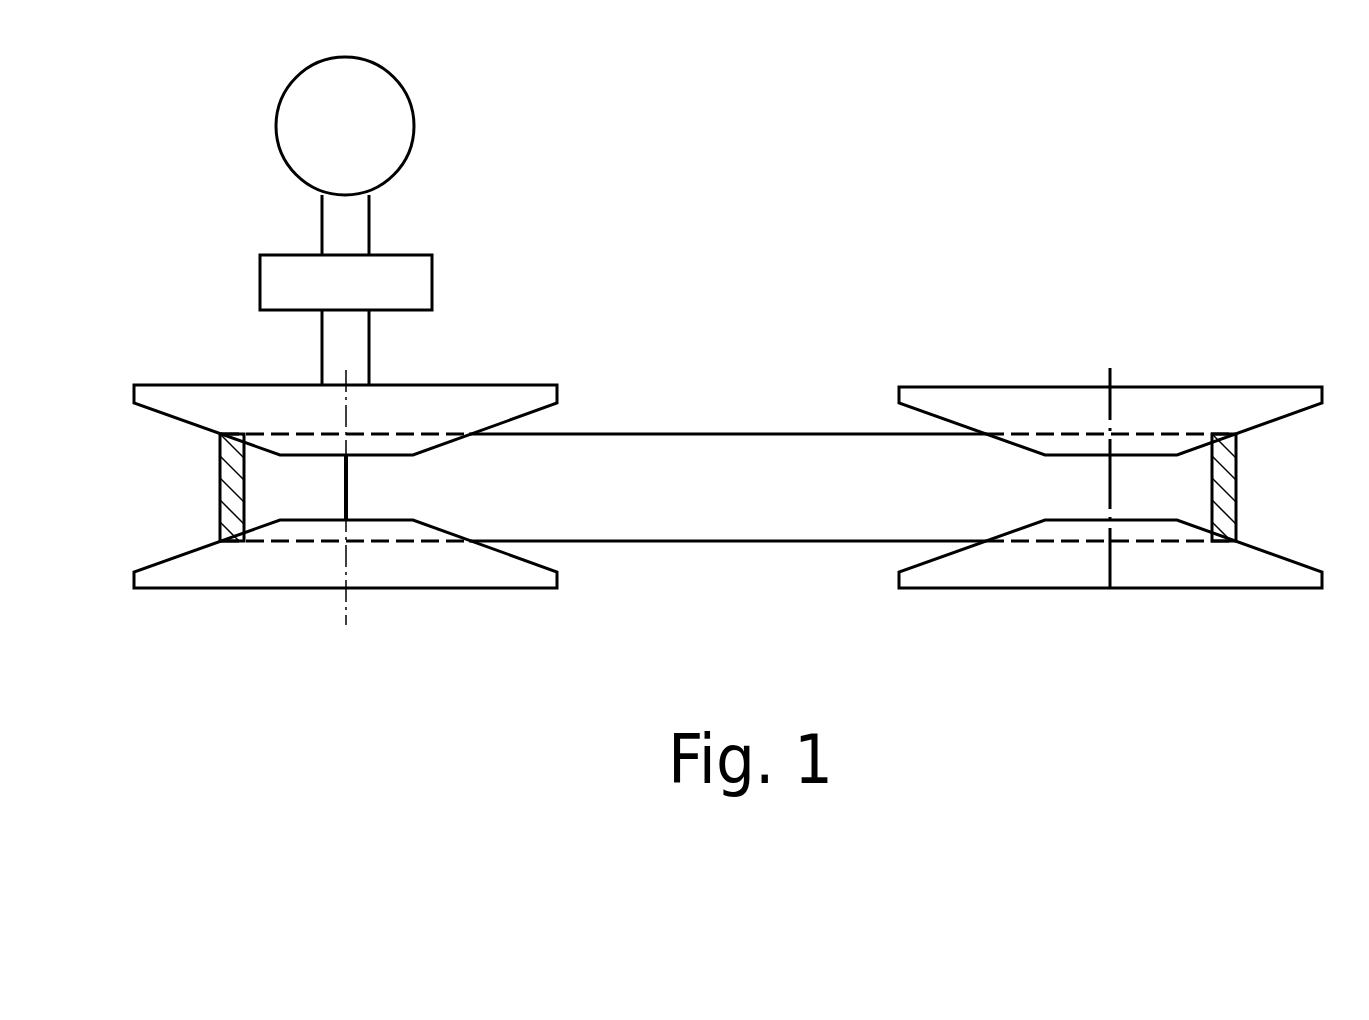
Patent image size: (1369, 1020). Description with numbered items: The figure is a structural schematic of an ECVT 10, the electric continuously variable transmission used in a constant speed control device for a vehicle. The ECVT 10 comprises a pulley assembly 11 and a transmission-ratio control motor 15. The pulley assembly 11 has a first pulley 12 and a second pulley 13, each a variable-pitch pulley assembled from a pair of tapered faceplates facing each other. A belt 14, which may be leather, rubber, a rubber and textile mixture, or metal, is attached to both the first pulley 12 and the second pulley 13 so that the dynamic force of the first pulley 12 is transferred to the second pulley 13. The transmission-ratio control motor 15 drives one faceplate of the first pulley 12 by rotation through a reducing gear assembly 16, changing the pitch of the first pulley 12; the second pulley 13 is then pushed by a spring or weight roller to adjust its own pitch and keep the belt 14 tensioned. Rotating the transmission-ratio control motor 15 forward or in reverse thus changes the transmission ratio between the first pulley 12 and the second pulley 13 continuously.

The ECVT 10 is at (1010, 154).
The pulley assembly 11 is at (768, 278).
The first pulley 12 is at (339, 451).
The second pulley 13 is at (1038, 385).
The belt 14 is at (233, 462).
The transmission-ratio control motor 15 is at (402, 128).
The reducing gear assembly 16 is at (432, 278).